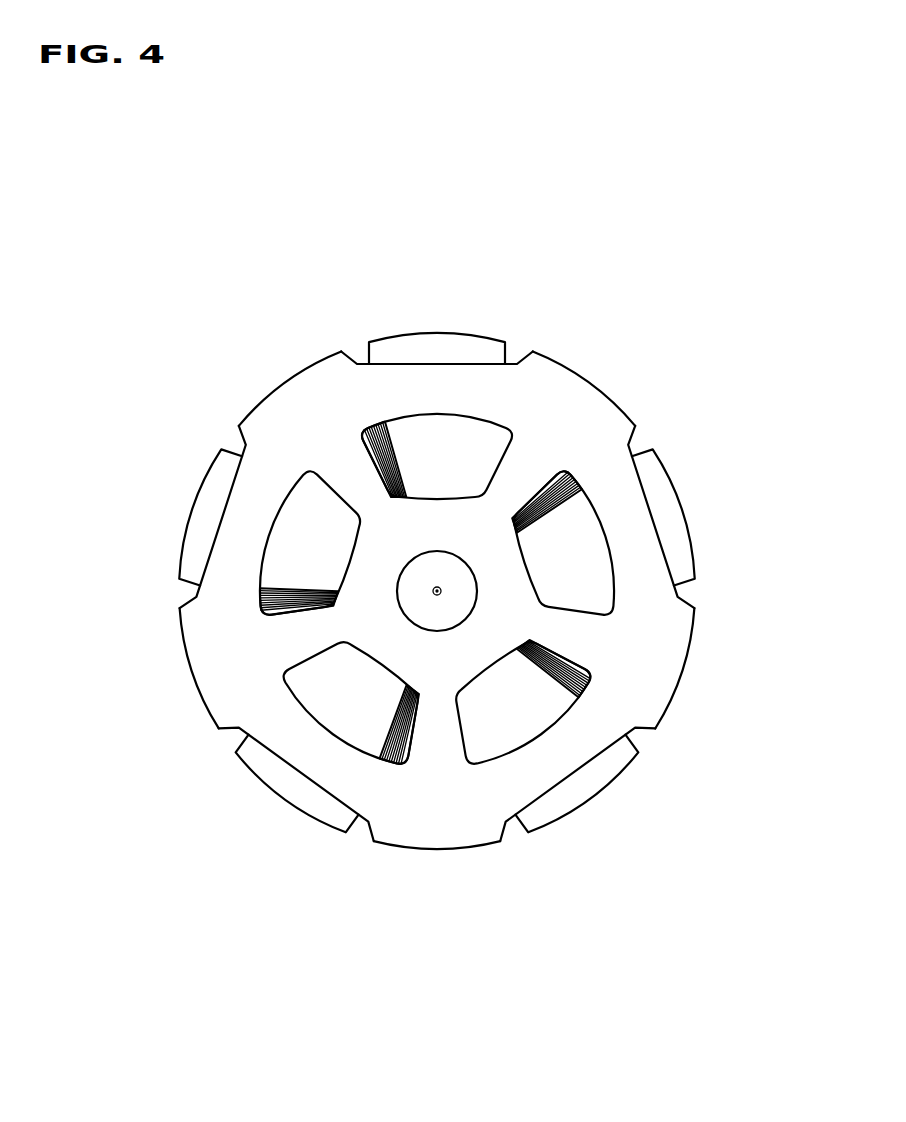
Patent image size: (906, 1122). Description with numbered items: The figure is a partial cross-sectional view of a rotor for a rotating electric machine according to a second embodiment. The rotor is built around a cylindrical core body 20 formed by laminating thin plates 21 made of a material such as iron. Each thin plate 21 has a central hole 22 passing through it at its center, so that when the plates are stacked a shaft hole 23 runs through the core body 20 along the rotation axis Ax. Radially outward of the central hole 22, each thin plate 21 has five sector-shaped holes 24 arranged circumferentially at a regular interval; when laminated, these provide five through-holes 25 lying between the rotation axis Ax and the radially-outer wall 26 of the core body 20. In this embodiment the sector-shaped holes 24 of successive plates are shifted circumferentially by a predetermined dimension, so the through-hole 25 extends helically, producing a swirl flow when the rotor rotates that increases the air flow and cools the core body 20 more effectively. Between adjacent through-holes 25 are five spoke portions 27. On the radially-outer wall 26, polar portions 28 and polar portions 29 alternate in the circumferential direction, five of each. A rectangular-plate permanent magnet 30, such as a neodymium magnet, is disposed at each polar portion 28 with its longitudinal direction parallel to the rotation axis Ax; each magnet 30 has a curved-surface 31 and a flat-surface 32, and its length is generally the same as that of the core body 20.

The core body 20 is at (352, 380).
The thin plate 21 is at (325, 392).
The central hole 22 is at (464, 567).
The shaft hole 23 is at (428, 556).
The sector-shaped hole 24 is at (396, 463).
The through-hole 25 is at (439, 418).
The radially-outer wall 26 is at (286, 372).
The spoke portion 27 is at (356, 482).
The polar portion 28 is at (435, 570).
The polar portion 29 is at (265, 393).
The magnet 30 is at (435, 570).
The curved-surface 31 is at (476, 337).
The flat-surface 32 is at (492, 366).
The rotation axis Ax is at (441, 591).